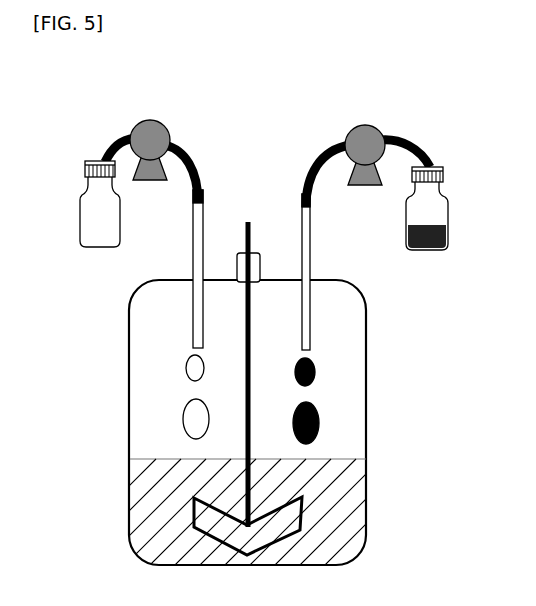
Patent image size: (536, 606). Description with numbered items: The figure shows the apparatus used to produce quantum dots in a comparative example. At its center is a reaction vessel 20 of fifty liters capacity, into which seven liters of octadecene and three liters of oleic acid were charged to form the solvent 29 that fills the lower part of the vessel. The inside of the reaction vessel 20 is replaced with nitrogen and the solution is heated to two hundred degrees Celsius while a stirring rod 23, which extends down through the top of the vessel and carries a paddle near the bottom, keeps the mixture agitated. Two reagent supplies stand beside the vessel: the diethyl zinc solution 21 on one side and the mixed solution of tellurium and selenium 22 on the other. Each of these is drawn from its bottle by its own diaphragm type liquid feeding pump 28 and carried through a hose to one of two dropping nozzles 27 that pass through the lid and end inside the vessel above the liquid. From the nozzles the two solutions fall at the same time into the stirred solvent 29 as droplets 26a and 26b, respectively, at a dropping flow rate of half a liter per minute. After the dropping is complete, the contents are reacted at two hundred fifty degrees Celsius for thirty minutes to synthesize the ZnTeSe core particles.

The reaction vessel 20 is at (366, 383).
The diethyl zinc solution 21 is at (430, 250).
The mixed solution of tellurium and selenium 22 is at (100, 240).
The stirring rod 23 is at (243, 253).
The droplets 26a is at (315, 442).
The droplets 26b is at (188, 425).
The dropping nozzles 27 is at (195, 312).
The diaphragm type liquid feeding pumps 28 is at (140, 128).
The solvent 29 is at (348, 525).